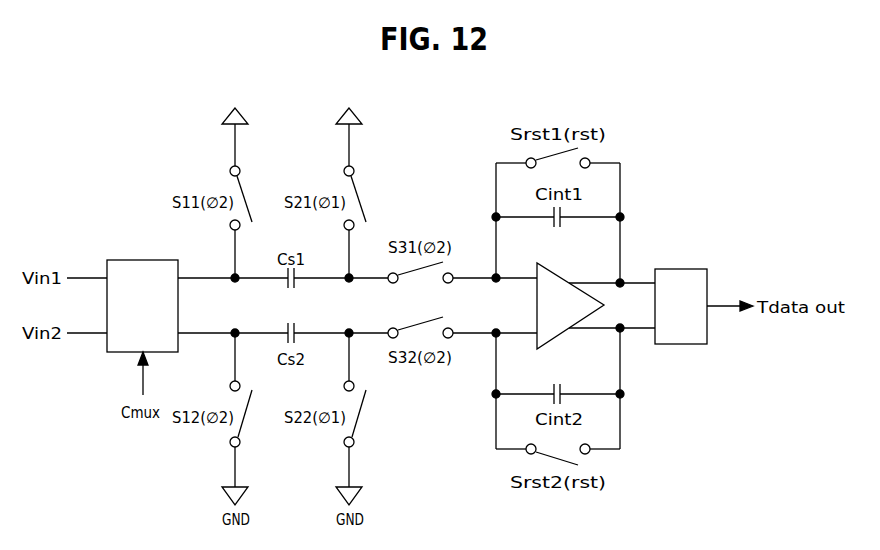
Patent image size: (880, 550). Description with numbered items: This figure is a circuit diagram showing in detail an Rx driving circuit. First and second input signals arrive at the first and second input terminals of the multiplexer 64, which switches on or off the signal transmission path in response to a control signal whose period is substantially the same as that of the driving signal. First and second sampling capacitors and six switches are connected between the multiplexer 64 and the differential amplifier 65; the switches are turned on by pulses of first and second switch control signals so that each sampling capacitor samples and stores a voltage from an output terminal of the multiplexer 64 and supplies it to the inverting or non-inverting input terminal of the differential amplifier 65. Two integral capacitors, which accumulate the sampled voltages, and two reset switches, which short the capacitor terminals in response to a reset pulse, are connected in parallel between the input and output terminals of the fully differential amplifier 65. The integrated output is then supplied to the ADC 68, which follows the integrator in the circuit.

The multiplexer 64 is at (141, 259).
The differential amplifier 65 is at (557, 274).
The ADC 68 is at (680, 268).